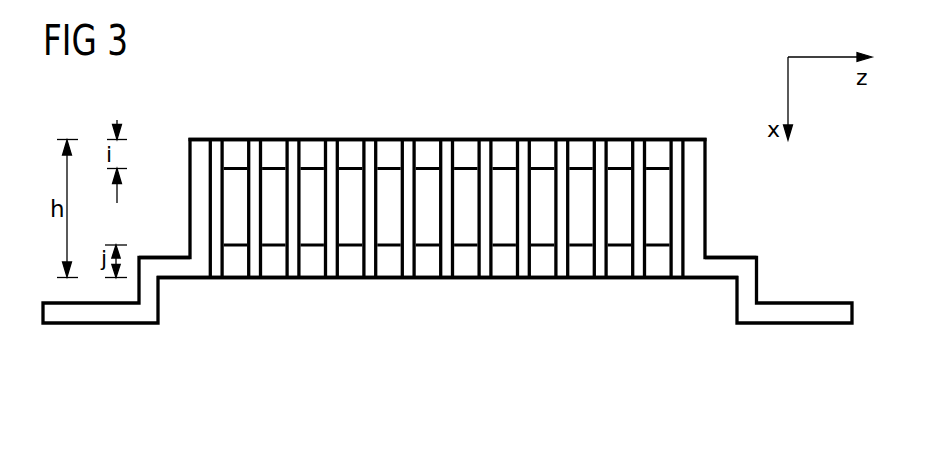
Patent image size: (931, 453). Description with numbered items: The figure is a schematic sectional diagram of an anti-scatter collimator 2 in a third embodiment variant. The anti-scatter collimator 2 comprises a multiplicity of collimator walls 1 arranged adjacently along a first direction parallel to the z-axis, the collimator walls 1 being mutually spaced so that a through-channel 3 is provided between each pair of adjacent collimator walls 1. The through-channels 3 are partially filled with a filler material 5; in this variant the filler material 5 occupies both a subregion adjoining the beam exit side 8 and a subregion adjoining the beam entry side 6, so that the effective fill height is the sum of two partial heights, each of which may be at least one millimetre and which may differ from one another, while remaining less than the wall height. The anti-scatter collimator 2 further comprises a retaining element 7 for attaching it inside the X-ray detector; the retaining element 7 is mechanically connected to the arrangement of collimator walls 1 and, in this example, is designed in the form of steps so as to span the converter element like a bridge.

The collimator walls 1 is at (215, 139).
The anti-scatter collimator 2 is at (810, 224).
The through-channel 3 is at (425, 185).
The filler material 5 is at (351, 143).
The beam entry side 6 is at (585, 113).
The retaining element 7 is at (167, 263).
The beam exit side 8 is at (584, 291).